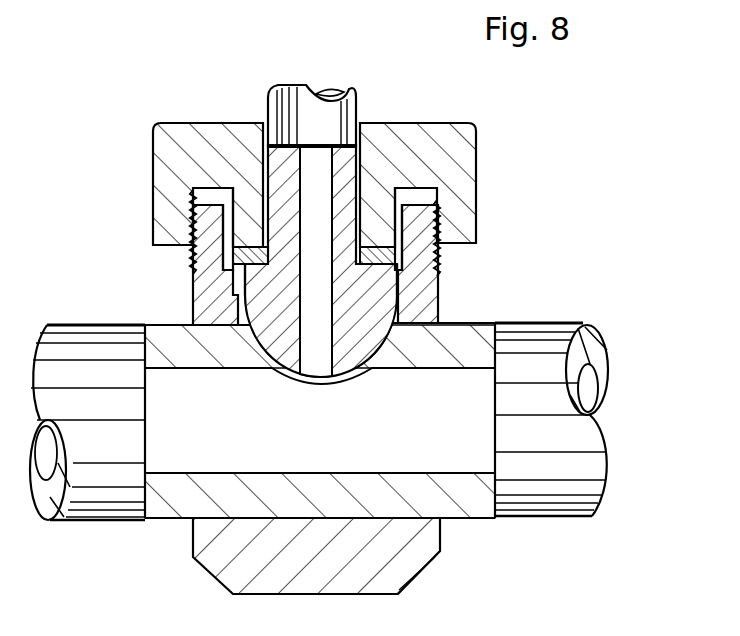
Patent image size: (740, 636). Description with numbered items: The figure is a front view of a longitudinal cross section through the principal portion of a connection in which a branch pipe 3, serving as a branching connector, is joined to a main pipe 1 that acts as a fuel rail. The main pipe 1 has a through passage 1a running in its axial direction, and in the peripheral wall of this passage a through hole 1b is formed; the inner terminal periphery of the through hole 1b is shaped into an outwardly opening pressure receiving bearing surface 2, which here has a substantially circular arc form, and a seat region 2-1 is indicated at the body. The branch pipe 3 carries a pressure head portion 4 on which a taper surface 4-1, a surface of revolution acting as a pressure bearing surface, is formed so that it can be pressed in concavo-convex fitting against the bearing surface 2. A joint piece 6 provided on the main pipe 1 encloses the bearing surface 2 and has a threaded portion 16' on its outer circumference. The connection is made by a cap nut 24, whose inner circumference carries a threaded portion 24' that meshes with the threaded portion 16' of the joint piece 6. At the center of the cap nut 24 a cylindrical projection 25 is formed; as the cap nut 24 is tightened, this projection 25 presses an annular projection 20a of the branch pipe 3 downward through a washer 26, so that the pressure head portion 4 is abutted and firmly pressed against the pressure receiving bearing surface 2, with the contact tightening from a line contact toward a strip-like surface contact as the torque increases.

The main pipe 1 is at (83, 493).
The through passage 1a is at (262, 322).
The through hole 1b is at (338, 376).
The pressure receiving bearing surface 2 is at (163, 462).
The valve seat 2-1 is at (465, 320).
The branch pipe 3 is at (335, 122).
The pressure head portion 4 is at (372, 340).
The taper surface 4-1 is at (240, 300).
The joint piece 6 is at (205, 272).
The threaded portion 16' is at (366, 233).
The annular projection 20a is at (382, 287).
The cap nut 24 is at (451, 185).
The threaded portion 24' is at (168, 185).
The cylindrical projection 25 is at (380, 203).
The washer 26 is at (240, 254).